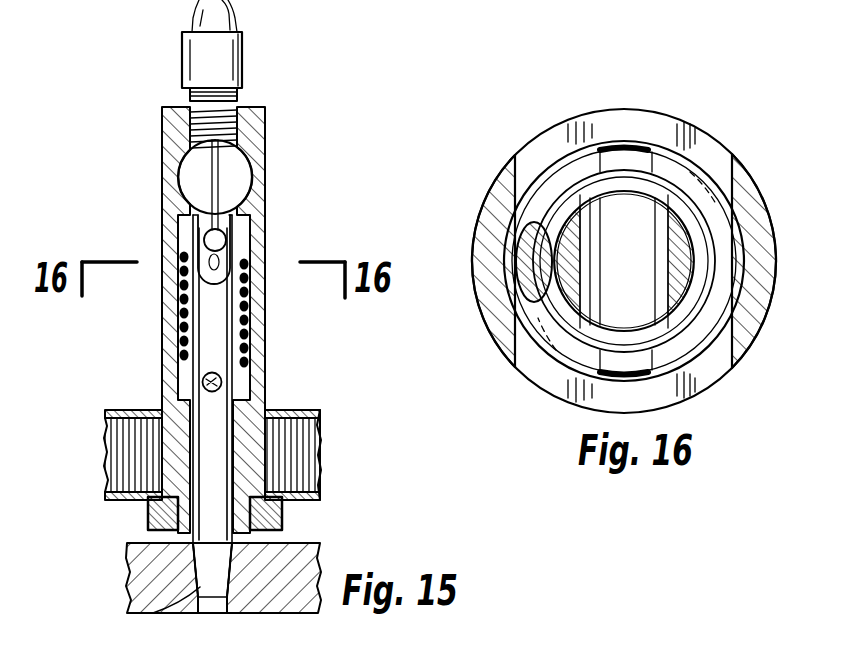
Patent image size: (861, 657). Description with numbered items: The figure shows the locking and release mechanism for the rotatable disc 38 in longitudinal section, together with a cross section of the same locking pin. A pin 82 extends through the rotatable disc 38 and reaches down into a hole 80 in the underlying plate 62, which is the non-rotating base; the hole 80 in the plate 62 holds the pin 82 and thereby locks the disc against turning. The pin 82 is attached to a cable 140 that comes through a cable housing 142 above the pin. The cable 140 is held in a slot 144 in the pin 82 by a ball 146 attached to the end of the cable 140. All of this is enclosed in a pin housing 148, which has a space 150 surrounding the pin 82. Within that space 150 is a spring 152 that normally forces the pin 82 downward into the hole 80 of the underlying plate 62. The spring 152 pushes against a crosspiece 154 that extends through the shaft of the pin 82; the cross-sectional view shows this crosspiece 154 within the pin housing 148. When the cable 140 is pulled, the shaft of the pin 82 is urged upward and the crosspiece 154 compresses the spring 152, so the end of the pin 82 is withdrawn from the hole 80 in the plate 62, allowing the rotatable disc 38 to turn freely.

In FIG. 15, the rotatable disc 38 is at (303, 452).
In FIG. 15, the plate 62 is at (153, 567).
In FIG. 15, the hole 80 is at (157, 610).
In FIG. 15, the pin 82 is at (223, 570).
In FIG. 15, the cable 140 is at (215, 175).
In FIG. 15, the cable housing 142 is at (233, 12).
In FIG. 15, the slot 144 is at (200, 272).
In FIG. 15, the ball 146 is at (240, 249).
In FIG. 15, the pin housing 148 is at (250, 352).
In FIG. 16, the pin housing 148 is at (641, 120).
In FIG. 15, the space 150 is at (182, 318).
In FIG. 15, the spring 152 is at (252, 336).
In FIG. 15, the crosspiece 154 is at (222, 382).
In FIG. 16, the crosspiece 154 is at (705, 180).